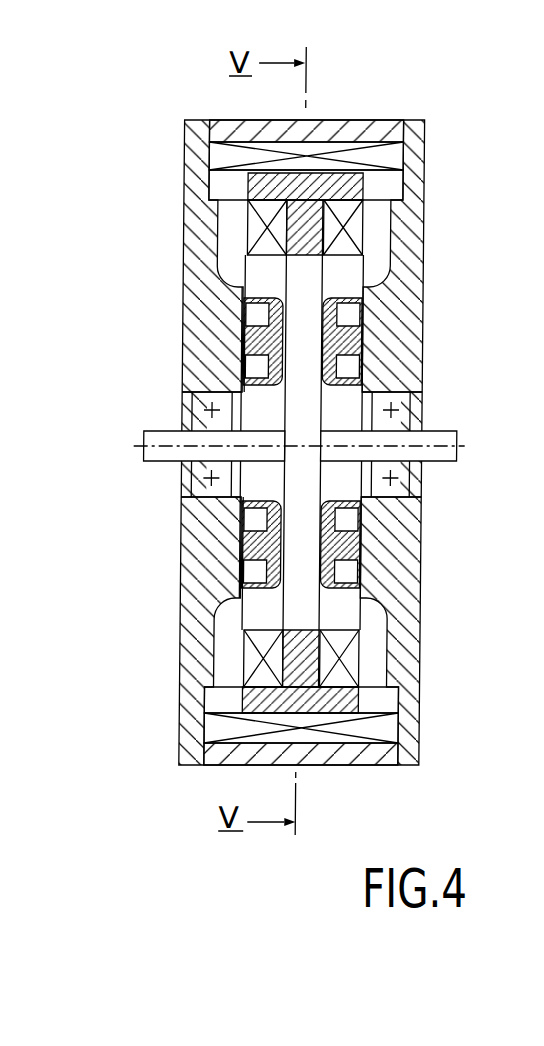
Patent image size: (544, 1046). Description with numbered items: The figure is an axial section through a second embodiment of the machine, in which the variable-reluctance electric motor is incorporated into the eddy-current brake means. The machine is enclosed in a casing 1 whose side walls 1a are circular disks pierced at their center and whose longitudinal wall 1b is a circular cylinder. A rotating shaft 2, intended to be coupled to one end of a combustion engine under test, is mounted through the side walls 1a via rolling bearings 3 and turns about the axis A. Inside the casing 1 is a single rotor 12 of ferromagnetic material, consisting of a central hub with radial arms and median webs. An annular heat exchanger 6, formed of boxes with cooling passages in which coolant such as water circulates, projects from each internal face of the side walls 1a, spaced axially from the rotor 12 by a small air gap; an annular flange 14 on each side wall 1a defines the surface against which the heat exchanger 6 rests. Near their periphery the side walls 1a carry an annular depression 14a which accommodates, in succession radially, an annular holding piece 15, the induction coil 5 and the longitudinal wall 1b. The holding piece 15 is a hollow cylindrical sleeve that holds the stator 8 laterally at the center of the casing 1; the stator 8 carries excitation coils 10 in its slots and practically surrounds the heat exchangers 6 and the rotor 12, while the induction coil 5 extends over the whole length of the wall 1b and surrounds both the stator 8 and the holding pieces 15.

The casing 1 is at (172, 120).
The side walls 1a is at (199, 267).
The longitudinal wall 1b is at (358, 130).
The rotating shaft 2 is at (445, 433).
The rolling bearings 3 is at (410, 412).
The induction coil 5 is at (388, 160).
The annular heat exchanger 6 is at (243, 343).
The stator 8 is at (305, 200).
The excitation coils 10 is at (353, 237).
The rotor 12 is at (307, 480).
The annular flange 14 is at (231, 600).
The annular depression 14a is at (213, 200).
The annular holding piece 15 is at (227, 186).
The axis A is at (125, 444).